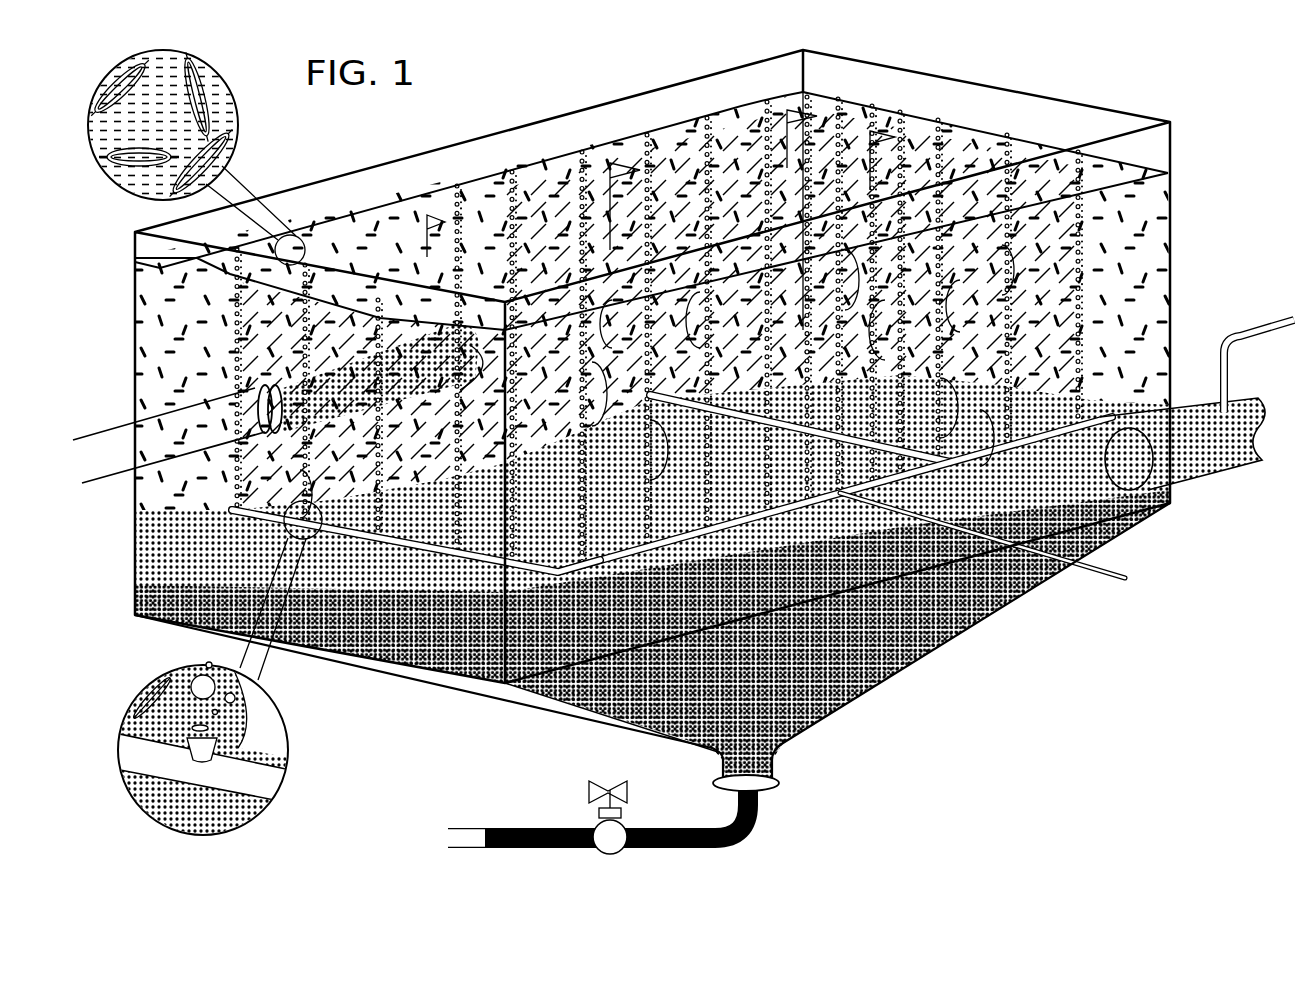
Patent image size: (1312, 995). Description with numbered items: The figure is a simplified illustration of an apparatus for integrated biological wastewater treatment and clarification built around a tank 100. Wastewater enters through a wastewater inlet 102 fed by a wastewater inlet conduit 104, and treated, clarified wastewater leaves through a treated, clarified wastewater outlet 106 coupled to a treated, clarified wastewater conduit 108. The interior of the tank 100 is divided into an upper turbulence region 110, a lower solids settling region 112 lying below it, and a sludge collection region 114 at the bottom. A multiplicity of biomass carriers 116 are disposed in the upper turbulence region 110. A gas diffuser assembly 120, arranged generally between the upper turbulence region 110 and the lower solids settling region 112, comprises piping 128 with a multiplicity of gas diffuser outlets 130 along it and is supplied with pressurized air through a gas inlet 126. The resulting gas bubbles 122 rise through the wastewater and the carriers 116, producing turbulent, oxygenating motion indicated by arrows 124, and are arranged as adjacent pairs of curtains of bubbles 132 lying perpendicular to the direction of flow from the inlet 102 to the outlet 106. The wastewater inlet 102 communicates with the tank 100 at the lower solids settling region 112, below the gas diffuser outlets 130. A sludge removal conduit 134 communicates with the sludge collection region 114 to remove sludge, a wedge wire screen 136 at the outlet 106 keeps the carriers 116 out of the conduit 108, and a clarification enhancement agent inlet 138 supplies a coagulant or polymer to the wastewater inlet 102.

The tank 100 is at (1070, 102).
The wastewater inlet 102 is at (1180, 488).
The wastewater inlet conduit 104 is at (1213, 450).
The treated, clarified wastewater outlet 106 is at (375, 440).
The treated, clarified wastewater conduit 108 is at (98, 452).
The upper turbulence region 110 is at (1120, 303).
The lower solids settling region 112 is at (148, 570).
The sludge collection region 114 is at (870, 648).
The biomass carriers 116 is at (216, 94).
The gas diffuser assembly 120 is at (672, 620).
The gas bubbles 122 is at (225, 325).
The arrows 124 is at (942, 322).
The gas inlet 126 is at (1080, 563).
The piping 128 is at (440, 550).
The gas diffuser outlets 130 is at (258, 715).
The curtains of bubbles 132 is at (490, 232).
The sludge removal conduit 134 is at (682, 833).
The wedge wire screen 136 is at (317, 448).
The clarification enhancement agent inlet 138 is at (1240, 400).